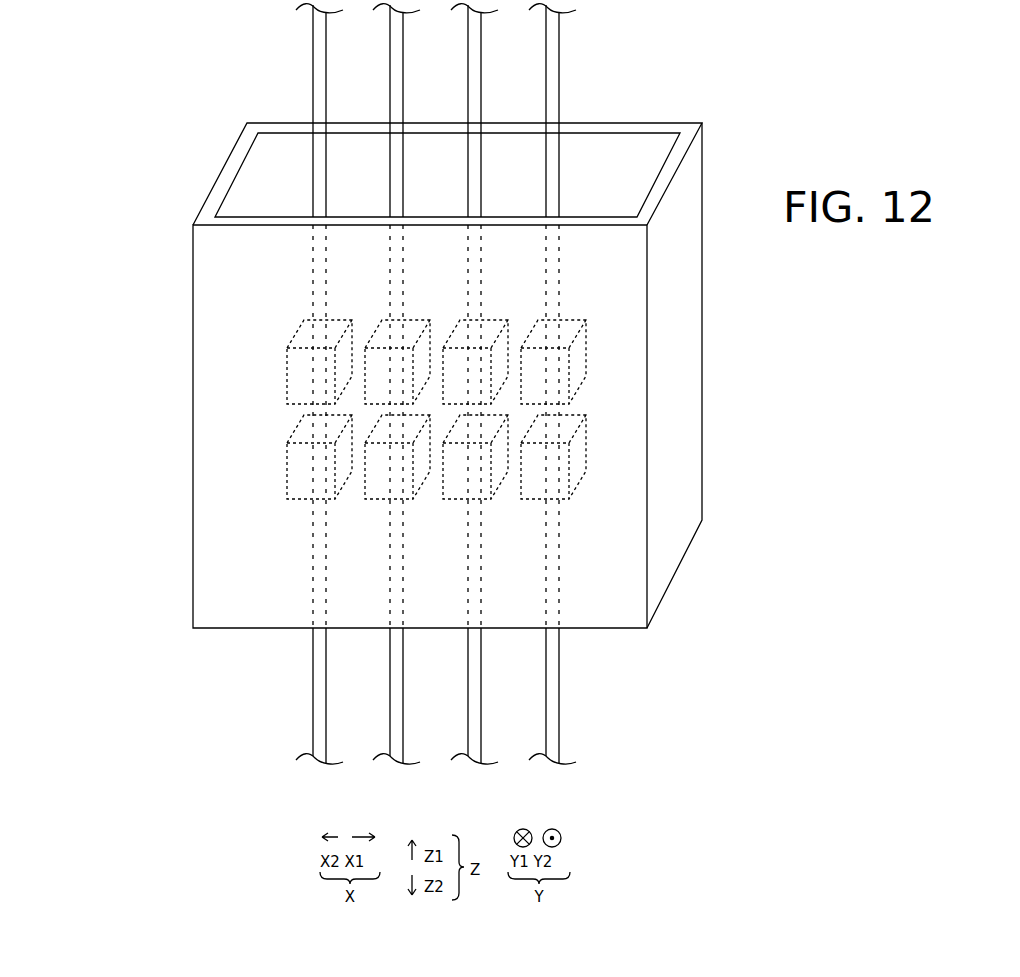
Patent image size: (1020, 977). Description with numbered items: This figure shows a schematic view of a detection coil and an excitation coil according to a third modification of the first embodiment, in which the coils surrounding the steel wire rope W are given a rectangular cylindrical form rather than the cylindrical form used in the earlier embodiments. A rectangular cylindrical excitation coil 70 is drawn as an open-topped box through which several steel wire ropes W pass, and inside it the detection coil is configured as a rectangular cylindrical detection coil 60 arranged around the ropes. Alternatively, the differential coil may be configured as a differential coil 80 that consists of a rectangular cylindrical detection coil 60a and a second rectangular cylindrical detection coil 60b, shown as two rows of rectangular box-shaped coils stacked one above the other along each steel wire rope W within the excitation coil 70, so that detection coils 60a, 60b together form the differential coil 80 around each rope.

The excitation coil 70 is at (702, 297).
The steel wire rope W is at (560, 682).
The detection coil 60a is at (287, 373).
The detection coil 60b is at (287, 470).
The rectangular cylindrical detection coil 60 is at (317, 409).
The differential coil 80 is at (317, 409).